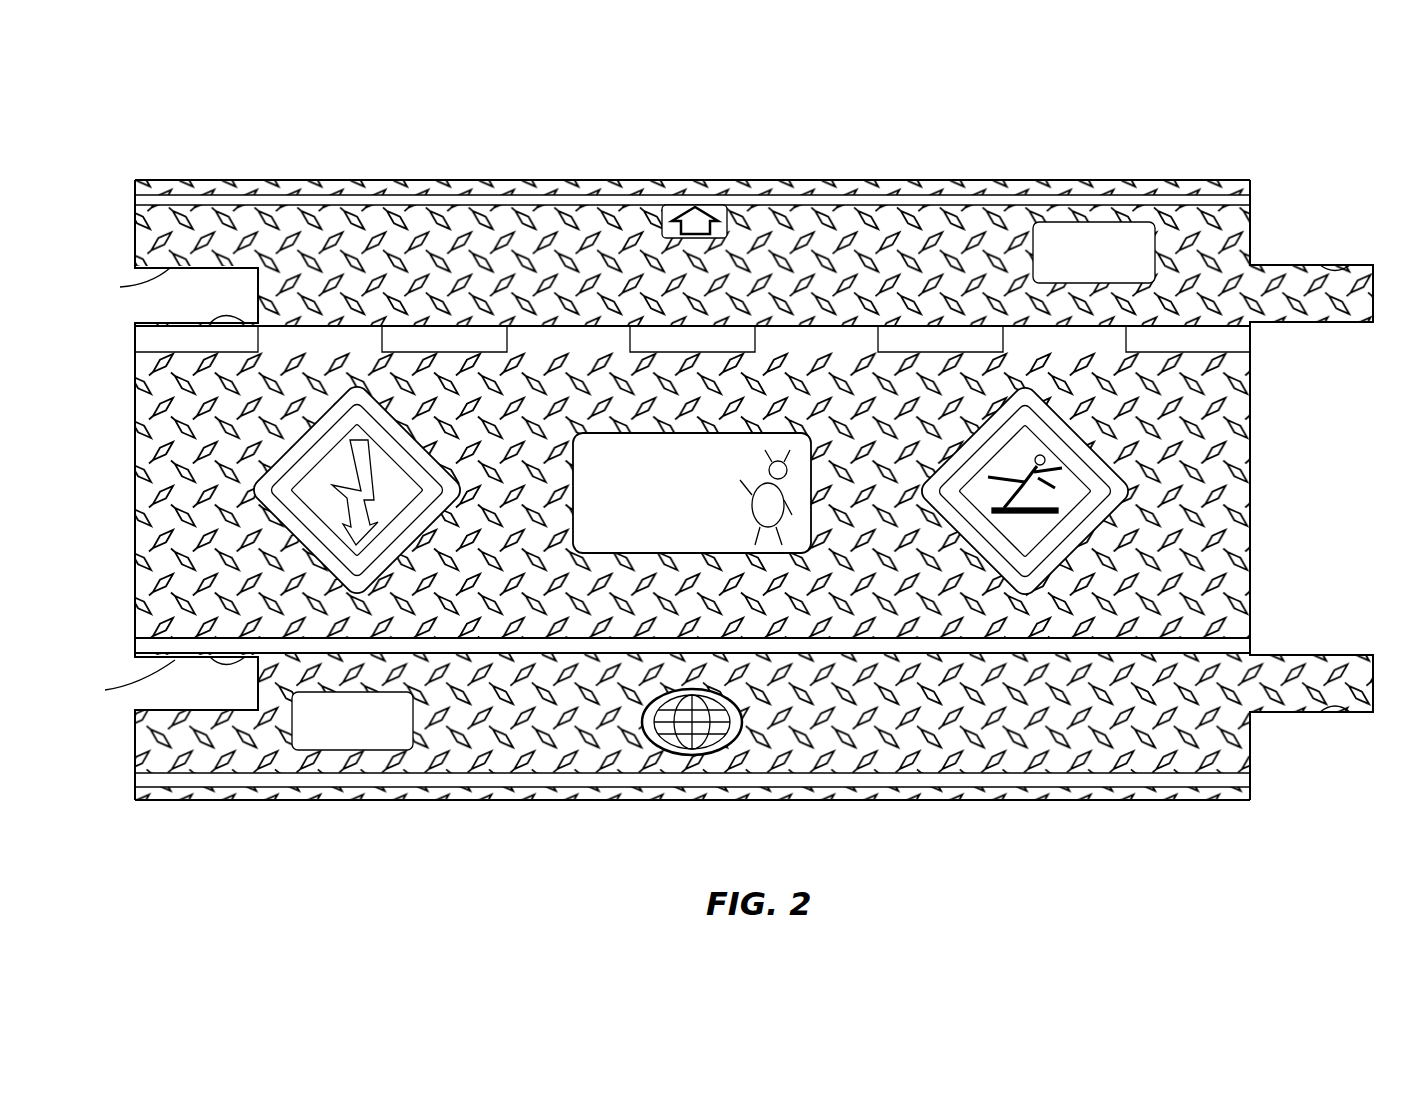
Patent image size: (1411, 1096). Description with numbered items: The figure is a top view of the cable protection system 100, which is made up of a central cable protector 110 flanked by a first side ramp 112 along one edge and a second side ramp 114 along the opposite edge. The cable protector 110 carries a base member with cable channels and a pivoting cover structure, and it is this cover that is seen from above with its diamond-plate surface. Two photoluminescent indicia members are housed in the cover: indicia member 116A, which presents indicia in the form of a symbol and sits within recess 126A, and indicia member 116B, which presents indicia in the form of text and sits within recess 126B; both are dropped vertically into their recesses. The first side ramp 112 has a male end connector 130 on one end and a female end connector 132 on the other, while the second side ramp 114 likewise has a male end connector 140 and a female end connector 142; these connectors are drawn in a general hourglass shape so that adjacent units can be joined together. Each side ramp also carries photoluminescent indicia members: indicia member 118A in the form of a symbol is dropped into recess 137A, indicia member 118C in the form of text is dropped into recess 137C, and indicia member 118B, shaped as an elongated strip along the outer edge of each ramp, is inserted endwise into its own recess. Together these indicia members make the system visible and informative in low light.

The cable protection system 100 is at (1286, 172).
The cable protector 110 is at (709, 470).
The first side ramp 112 is at (505, 815).
The second side ramp 114 is at (320, 180).
The indicia member 116A is at (373, 440).
The indicia member 116B is at (731, 334).
The indicia member 118A is at (716, 462).
The indicia member 118B is at (1225, 197).
The indicia member 118C is at (1087, 232).
The recess 126A is at (265, 482).
The recess 126B is at (790, 440).
The male end connector 130 is at (1373, 690).
The female end connector 132 is at (152, 680).
The recess 137A is at (690, 215).
The recess 137C is at (1138, 233).
The male end connector 140 is at (1373, 290).
The female end connector 142 is at (160, 295).